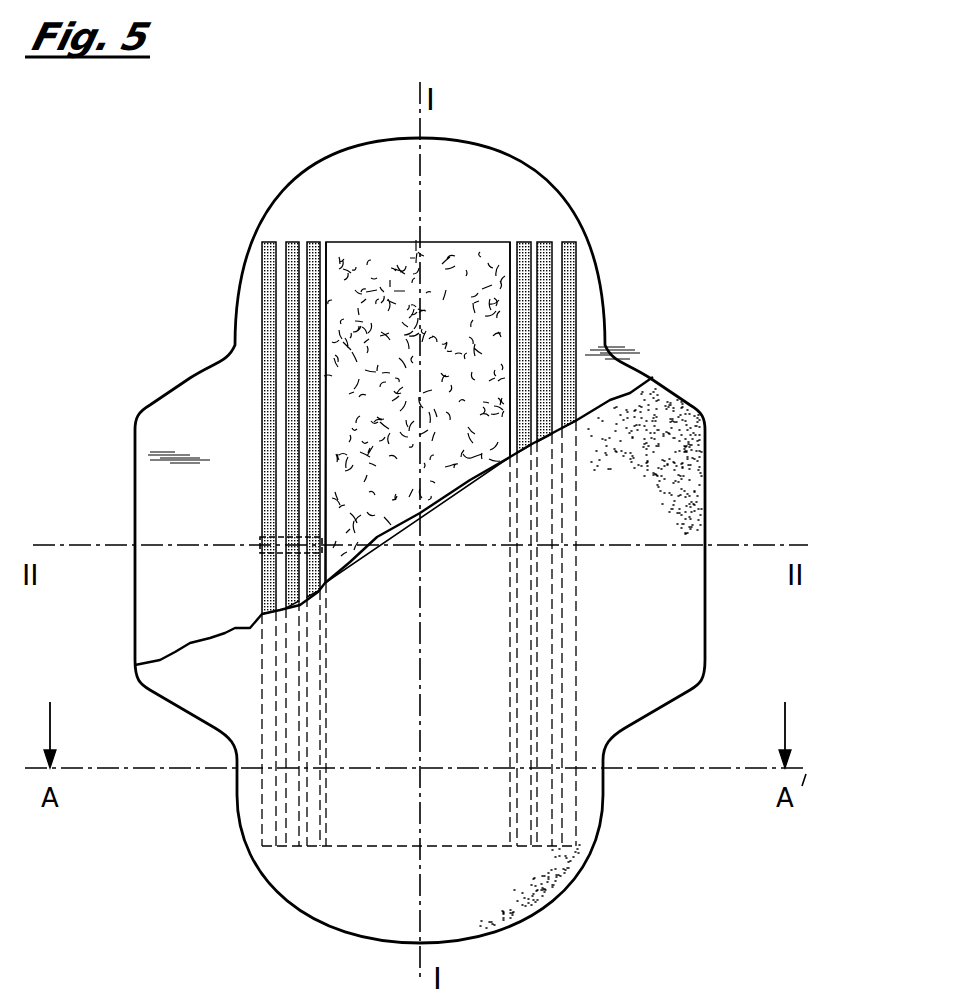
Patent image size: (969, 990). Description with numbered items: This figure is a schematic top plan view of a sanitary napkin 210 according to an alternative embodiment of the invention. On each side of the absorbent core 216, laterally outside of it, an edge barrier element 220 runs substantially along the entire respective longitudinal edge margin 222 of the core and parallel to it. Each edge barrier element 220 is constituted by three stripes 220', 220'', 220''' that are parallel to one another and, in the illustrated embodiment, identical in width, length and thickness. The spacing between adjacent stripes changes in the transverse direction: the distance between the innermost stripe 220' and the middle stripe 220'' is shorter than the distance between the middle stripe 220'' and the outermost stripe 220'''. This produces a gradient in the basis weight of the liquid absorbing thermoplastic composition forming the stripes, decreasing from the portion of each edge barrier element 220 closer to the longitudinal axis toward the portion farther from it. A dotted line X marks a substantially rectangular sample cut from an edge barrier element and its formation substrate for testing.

The sanitary napkin 210 is at (592, 108).
The absorbent core 216 is at (397, 257).
The edge barrier element 220 is at (405, 491).
The innermost stripe 220' is at (405, 419).
The middle stripe 220'' is at (423, 425).
The outermost stripe 220''' is at (425, 421).
The longitudinal edge margin 222 is at (326, 318).
The sample X is at (260, 536).